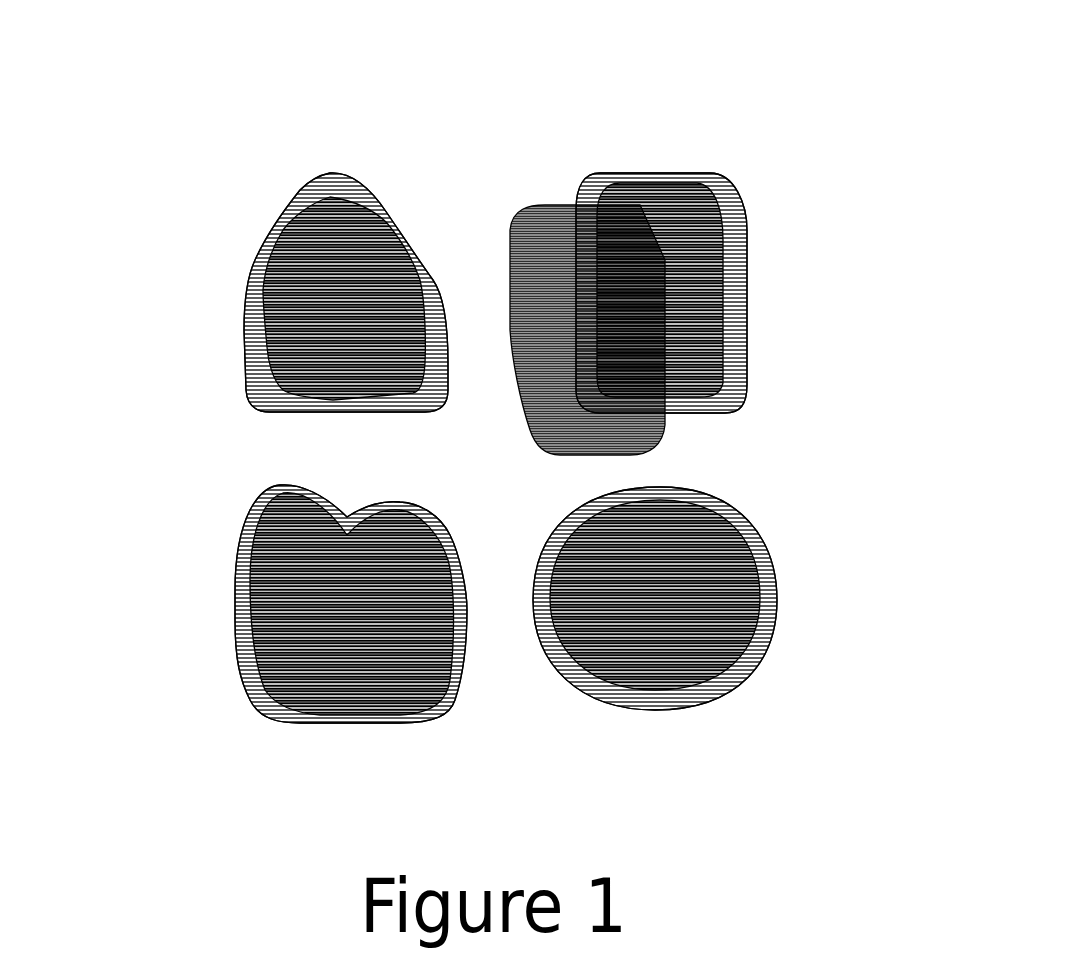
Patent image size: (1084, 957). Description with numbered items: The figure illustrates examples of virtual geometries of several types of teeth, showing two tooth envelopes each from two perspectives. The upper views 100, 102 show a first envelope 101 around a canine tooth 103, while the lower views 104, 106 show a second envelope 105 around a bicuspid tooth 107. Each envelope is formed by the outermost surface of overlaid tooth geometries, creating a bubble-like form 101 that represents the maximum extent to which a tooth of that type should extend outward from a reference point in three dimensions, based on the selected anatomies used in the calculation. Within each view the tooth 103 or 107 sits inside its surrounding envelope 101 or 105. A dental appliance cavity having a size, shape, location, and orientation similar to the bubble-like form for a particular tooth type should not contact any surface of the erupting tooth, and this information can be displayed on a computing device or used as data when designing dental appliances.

The first perspective view of canine tooth envelope 100 is at (197, 300).
The first envelope 101 is at (280, 212).
The second perspective view of canine tooth envelope 102 is at (807, 288).
The canine tooth 103 is at (307, 197).
The first perspective view of bicuspid tooth envelope 104 is at (183, 570).
The second envelope 105 is at (228, 623).
The second perspective view of bicuspid tooth envelope 106 is at (808, 558).
The bicuspid tooth 107 is at (277, 670).